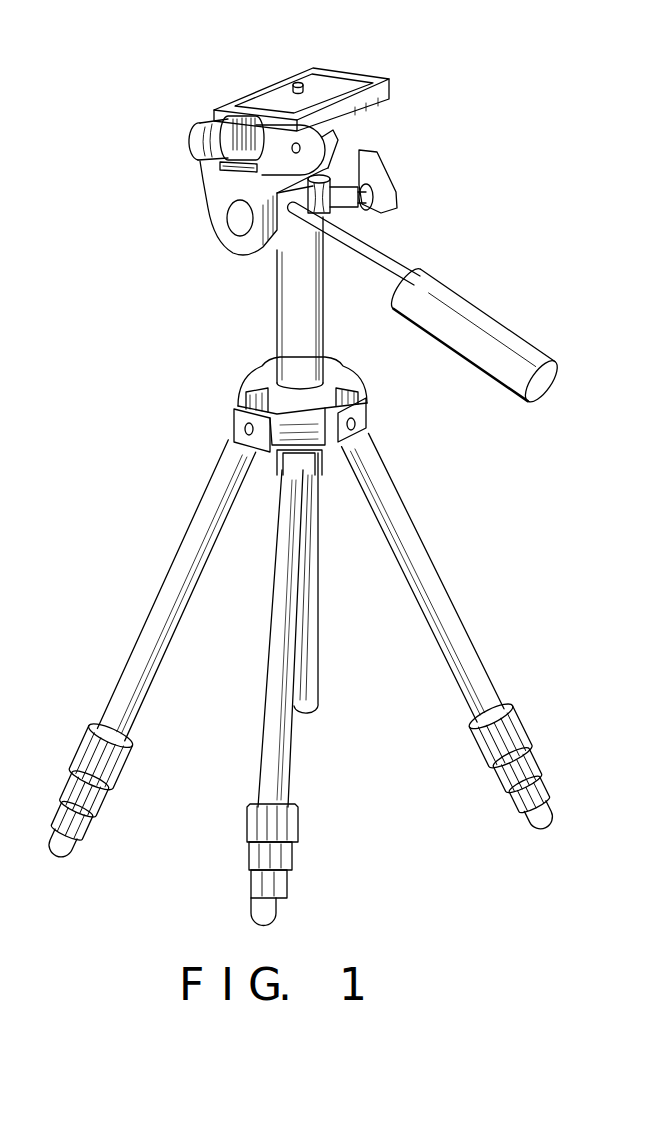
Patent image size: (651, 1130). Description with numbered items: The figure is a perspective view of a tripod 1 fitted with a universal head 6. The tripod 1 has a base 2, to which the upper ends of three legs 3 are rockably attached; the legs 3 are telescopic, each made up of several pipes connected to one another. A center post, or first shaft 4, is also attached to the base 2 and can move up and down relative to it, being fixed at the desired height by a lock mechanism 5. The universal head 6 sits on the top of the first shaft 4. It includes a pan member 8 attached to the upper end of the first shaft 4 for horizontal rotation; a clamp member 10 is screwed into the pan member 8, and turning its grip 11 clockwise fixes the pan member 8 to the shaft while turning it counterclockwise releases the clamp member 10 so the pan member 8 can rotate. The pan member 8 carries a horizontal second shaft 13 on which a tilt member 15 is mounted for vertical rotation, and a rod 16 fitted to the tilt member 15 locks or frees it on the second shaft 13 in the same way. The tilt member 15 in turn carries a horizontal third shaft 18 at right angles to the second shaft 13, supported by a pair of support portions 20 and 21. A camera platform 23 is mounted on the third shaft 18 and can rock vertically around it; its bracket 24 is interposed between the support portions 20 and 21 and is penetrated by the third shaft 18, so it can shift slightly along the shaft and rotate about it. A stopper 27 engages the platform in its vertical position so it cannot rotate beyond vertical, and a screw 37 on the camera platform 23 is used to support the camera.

The tripod 1 is at (160, 307).
The base 2 is at (236, 416).
The legs 3 is at (135, 622).
The center post (first shaft) 4 is at (277, 326).
The lock mechanism 5 is at (252, 382).
The universal head 6 is at (155, 112).
The pan member 8 is at (325, 185).
The clamp member 10 is at (364, 206).
The grip 11 is at (392, 192).
The second shaft 13 is at (235, 230).
The tilt member 15 is at (206, 207).
The rod 16 is at (505, 325).
The third shaft 18 is at (302, 150).
The support portion 20 is at (280, 124).
The support portion 21 is at (210, 122).
The camera platform 23 is at (352, 74).
The bracket 24 is at (213, 138).
The stopper 27 is at (206, 173).
The screw 37 is at (298, 82).